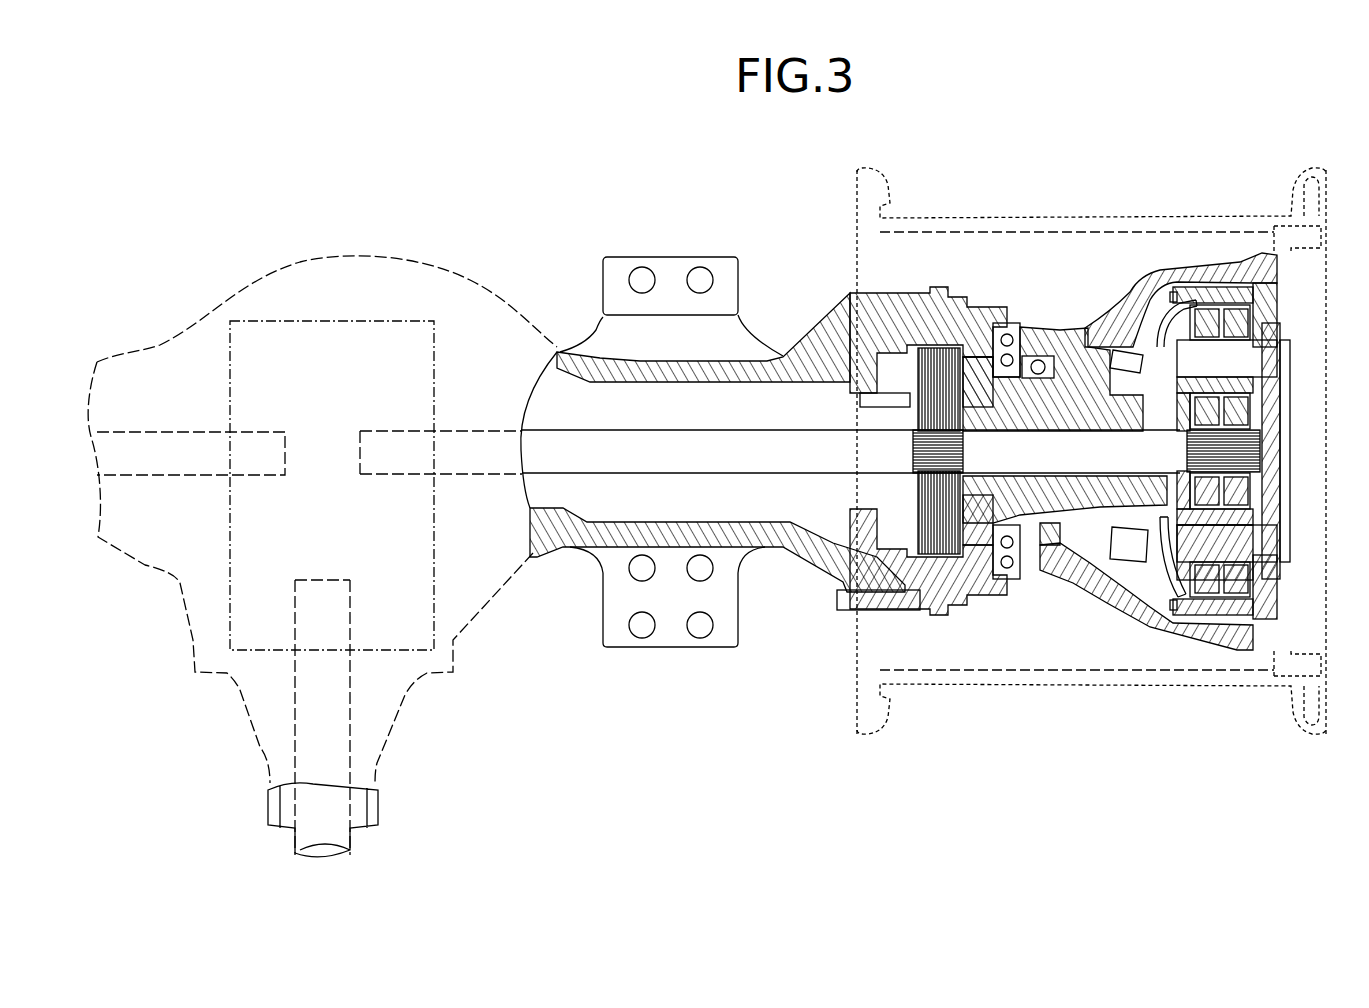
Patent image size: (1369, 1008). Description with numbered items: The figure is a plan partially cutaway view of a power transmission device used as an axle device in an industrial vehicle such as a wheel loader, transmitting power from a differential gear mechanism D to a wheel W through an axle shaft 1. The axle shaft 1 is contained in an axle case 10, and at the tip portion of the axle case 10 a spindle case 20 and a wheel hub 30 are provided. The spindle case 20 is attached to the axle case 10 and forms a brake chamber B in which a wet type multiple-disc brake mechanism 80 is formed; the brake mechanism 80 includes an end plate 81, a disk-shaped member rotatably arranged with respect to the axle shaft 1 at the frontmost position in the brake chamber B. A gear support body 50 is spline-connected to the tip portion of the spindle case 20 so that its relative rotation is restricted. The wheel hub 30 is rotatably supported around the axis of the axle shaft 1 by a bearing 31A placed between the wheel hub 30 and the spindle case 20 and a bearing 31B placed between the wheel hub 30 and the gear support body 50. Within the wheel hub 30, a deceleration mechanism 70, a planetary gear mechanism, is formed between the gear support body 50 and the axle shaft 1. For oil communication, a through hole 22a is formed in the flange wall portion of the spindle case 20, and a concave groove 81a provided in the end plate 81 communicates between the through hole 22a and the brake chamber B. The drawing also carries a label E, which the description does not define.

The axle shaft 1 is at (160, 432).
The differential gear mechanism D is at (383, 318).
The axle case 10 is at (550, 555).
The brake chamber B is at (848, 293).
The brake mechanism 80 is at (910, 330).
The spindle case 20 is at (950, 330).
The end plate 81 is at (975, 415).
The concave groove 81a is at (958, 320).
The through hole 22a is at (980, 330).
The wheel W is at (1076, 218).
The wheel hub 30 is at (1113, 325).
The bearing 31A is at (1040, 575).
The gear support body 50 is at (1110, 567).
The bearing 31B is at (1130, 557).
The end face E is at (1147, 607).
The deceleration mechanism 70 is at (1273, 493).